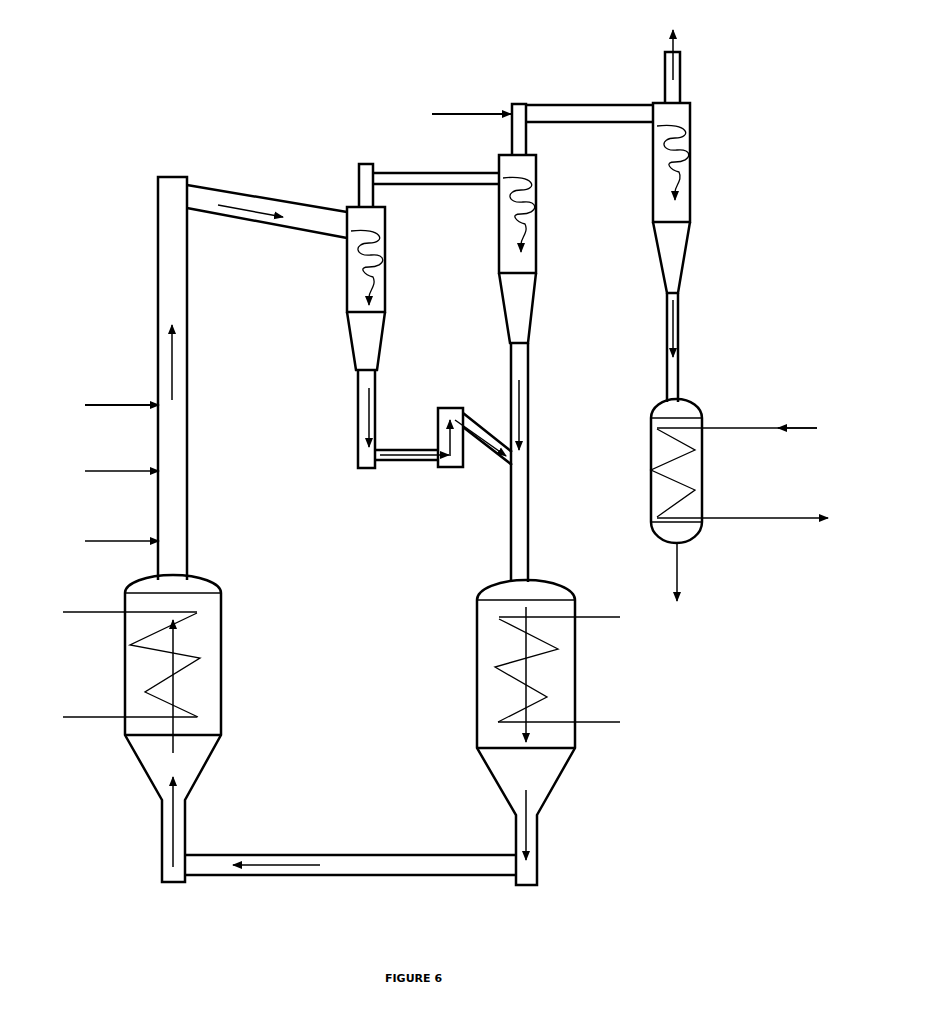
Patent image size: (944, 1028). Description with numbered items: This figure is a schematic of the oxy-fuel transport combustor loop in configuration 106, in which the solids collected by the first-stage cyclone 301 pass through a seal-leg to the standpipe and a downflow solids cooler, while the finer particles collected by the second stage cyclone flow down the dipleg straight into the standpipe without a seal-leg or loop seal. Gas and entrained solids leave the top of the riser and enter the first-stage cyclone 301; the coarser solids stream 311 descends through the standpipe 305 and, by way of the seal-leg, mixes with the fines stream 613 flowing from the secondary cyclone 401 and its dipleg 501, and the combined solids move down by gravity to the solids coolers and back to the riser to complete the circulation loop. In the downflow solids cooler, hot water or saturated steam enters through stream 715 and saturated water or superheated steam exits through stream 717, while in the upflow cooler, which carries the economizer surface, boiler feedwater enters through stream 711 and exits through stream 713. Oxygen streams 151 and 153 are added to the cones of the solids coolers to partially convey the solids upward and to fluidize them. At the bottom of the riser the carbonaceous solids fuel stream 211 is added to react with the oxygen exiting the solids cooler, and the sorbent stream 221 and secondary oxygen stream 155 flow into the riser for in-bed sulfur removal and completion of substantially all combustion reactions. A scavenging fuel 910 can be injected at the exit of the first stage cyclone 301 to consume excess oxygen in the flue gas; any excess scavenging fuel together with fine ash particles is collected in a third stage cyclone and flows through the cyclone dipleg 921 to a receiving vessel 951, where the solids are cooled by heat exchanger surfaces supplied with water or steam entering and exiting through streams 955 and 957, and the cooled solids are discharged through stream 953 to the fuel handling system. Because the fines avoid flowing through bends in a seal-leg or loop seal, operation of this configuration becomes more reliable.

The configuration 106 is at (708, 88).
The oxygen stream 151 is at (141, 770).
The oxygen stream 153 is at (558, 782).
The secondary oxygen stream 155 is at (122, 391).
The carbonaceous solids fuel stream 211 is at (120, 529).
The sorbent stream 221 is at (122, 459).
The first-stage cyclone 301 is at (346, 212).
The standpipe 305 is at (357, 423).
The coarser solids stream 311 is at (372, 437).
The secondary cyclone 401 is at (497, 155).
The dipleg 501 is at (509, 390).
The fines stream 613 is at (492, 452).
The boiler feedwater stream 711 is at (129, 708).
The economizer exit stream 713 is at (129, 601).
The hot water or saturated steam stream 715 is at (559, 711).
The saturated water or superheated steam stream 717 is at (559, 605).
The scavenging fuel 910 is at (471, 105).
The cyclone dipleg 921 is at (667, 358).
The receiving vessel 951 is at (650, 450).
The cooled solids stream 953 is at (695, 572).
The cooling medium inlet stream 955 is at (737, 411).
The cooling medium outlet stream 957 is at (742, 503).